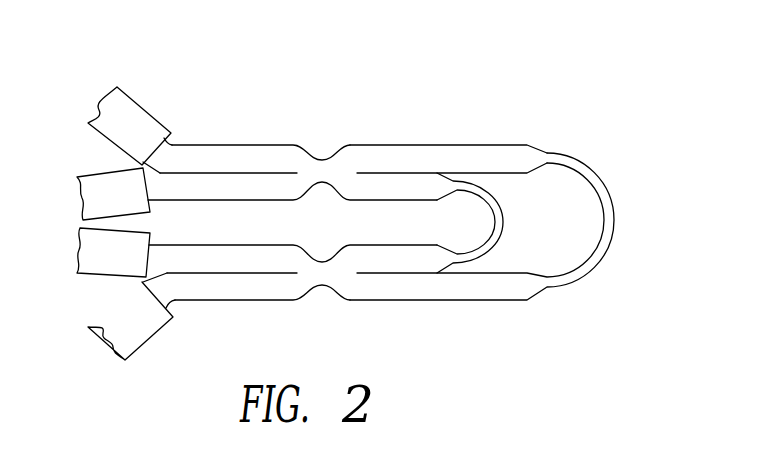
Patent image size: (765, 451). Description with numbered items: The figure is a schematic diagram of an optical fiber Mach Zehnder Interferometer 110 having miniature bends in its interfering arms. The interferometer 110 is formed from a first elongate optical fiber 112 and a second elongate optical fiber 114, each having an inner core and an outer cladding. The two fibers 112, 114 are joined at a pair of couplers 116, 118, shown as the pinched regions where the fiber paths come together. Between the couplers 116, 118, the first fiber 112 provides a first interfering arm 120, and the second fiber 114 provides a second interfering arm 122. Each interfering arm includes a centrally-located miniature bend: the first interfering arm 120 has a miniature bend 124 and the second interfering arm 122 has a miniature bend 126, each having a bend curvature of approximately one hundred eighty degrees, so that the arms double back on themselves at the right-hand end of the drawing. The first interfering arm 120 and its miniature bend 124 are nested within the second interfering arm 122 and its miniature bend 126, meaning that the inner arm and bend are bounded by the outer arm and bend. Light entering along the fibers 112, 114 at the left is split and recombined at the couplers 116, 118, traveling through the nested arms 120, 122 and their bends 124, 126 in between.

The optical fiber Mach Zehnder Interferometer 110 is at (313, 36).
The first elongate optical fiber 112 is at (97, 197).
The second elongate optical fiber 114 is at (118, 128).
The coupler 116 is at (325, 150).
The coupler 118 is at (323, 289).
The first interfering arm 120 is at (378, 188).
The second interfering arm 122 is at (433, 152).
The miniature bend 124 is at (505, 218).
The miniature bend 126 is at (605, 186).